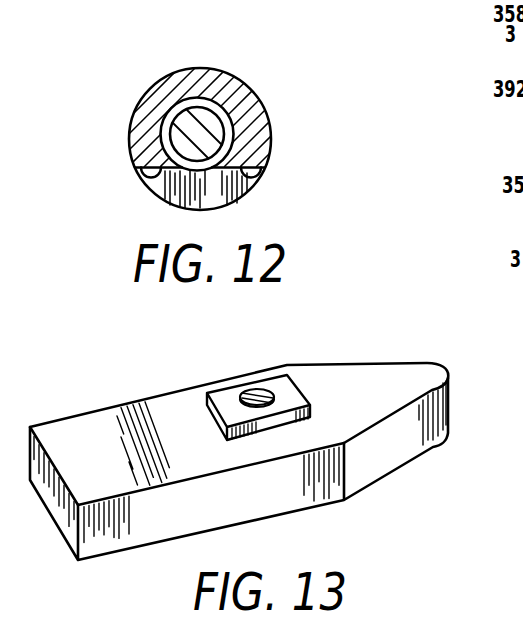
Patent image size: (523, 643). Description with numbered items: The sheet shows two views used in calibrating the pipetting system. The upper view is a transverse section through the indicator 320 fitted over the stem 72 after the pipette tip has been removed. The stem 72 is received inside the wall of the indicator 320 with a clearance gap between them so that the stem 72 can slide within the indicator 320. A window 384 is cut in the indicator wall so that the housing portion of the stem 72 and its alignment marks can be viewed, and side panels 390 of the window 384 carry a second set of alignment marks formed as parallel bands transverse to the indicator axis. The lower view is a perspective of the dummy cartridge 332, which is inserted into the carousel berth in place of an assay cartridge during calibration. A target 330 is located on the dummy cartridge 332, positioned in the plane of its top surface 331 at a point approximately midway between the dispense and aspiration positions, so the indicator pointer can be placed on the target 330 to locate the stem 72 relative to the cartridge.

In FIG. 12, the indicator 320 is at (198, 67).
In FIG. 12, the stem 72 is at (164, 120).
In FIG. 12, the window 384 is at (217, 194).
In FIG. 12, the side panels 390 is at (297, 178).
In FIG. 13, the target 330 is at (256, 386).
In FIG. 13, the top surface 331 is at (388, 385).
In FIG. 13, the dummy cartridge 332 is at (332, 502).